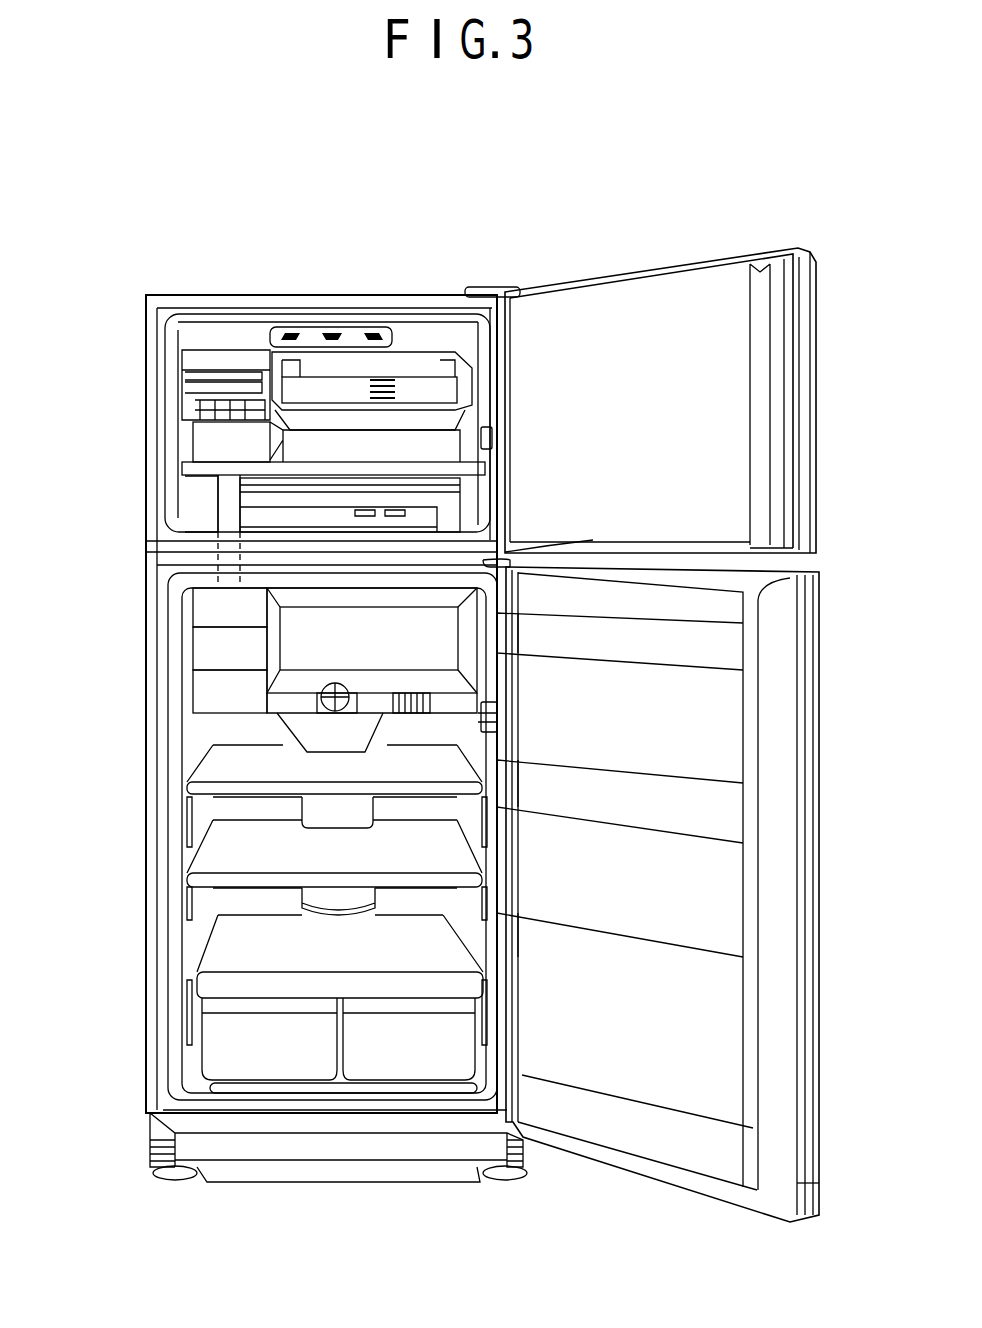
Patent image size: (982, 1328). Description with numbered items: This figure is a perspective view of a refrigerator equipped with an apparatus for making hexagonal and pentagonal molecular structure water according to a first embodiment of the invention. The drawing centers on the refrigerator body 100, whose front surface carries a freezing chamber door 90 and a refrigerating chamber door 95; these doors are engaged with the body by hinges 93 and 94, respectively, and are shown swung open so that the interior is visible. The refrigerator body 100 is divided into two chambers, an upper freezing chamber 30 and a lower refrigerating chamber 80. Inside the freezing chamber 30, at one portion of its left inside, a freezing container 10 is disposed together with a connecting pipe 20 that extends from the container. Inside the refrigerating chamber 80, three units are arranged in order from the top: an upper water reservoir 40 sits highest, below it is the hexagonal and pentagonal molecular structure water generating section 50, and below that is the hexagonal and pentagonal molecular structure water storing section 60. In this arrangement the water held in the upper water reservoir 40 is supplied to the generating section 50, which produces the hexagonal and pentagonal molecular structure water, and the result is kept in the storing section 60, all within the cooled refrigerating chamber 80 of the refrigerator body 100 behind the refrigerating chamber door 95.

The refrigerator body 100 is at (130, 941).
The freezing container 10 is at (205, 438).
The connecting pipe 20 is at (217, 513).
The freezing chamber 30 is at (172, 393).
The upper water reservoir 40 is at (205, 603).
The hexagonal and pentagonal molecular structure water generating section 50 is at (205, 653).
The hexagonal and pentagonal molecular structure water storing section 60 is at (205, 698).
The refrigerating chamber 80 is at (180, 793).
The freezing chamber door 90 is at (805, 358).
The hinge 93 is at (478, 295).
The hinge 94 is at (593, 540).
The refrigerating chamber door 95 is at (807, 887).